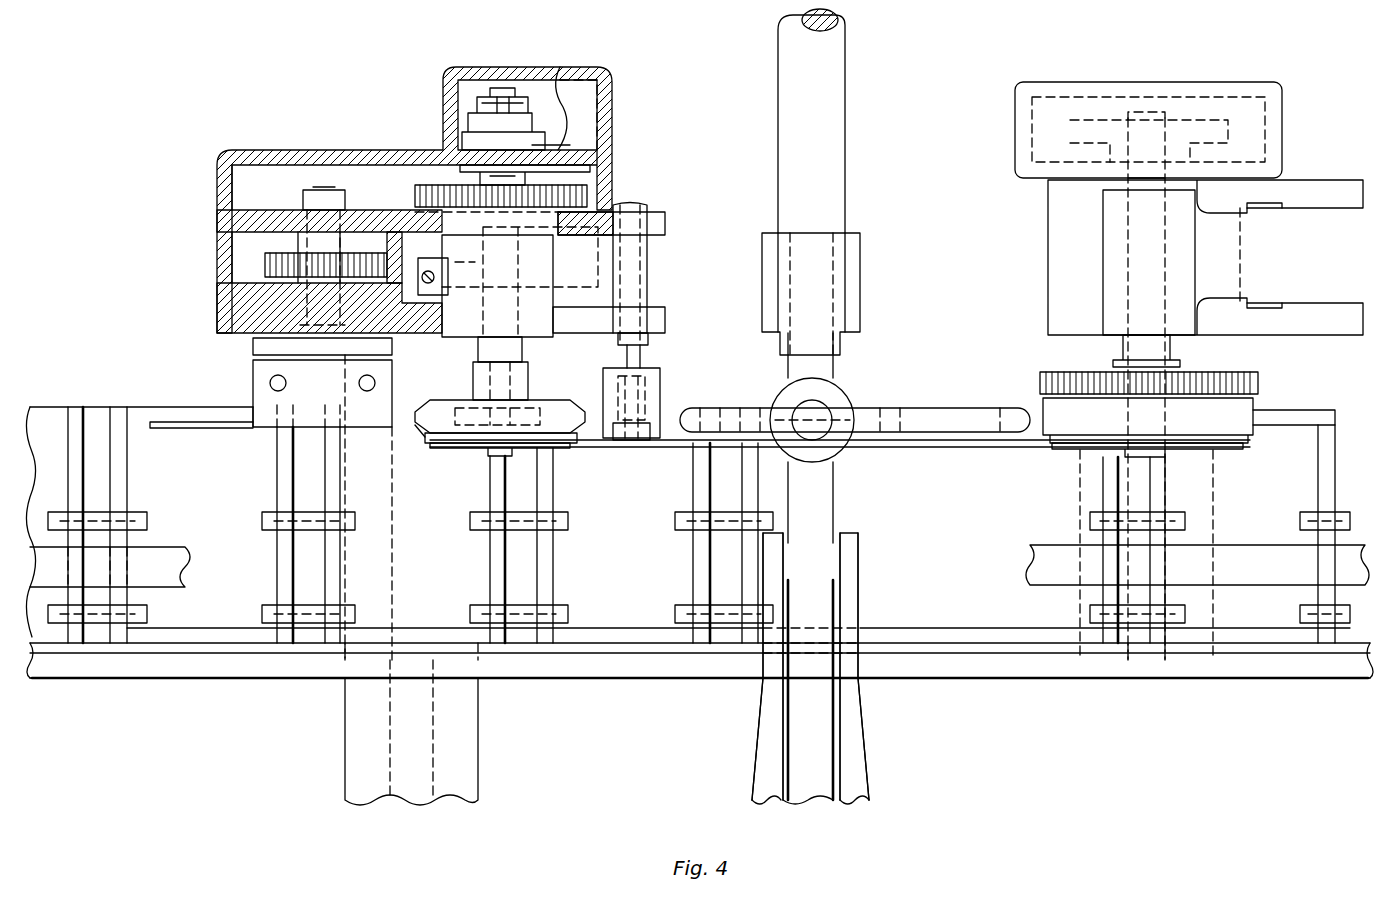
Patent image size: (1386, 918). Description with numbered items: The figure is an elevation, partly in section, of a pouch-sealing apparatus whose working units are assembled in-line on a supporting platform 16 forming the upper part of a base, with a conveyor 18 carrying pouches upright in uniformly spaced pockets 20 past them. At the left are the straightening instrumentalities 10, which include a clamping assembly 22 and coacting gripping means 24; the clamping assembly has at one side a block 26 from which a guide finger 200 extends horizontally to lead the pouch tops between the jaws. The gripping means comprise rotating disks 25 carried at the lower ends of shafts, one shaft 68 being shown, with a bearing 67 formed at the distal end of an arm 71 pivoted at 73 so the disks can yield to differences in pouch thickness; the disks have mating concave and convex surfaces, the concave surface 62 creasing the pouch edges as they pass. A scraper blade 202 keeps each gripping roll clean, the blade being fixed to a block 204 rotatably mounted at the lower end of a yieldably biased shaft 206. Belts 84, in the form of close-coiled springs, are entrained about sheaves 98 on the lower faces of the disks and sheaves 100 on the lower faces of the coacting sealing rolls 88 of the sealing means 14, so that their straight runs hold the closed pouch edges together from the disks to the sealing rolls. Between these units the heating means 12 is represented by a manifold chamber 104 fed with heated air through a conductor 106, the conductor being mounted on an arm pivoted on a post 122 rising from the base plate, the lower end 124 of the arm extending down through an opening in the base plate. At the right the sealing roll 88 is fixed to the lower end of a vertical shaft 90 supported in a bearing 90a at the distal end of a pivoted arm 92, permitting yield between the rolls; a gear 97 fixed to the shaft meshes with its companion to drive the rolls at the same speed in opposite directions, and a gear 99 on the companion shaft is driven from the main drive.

The straightening instrumentalities 10 is at (414, 197).
The heating means 12 is at (893, 390).
The sealing means 14 is at (1305, 128).
The supporting platform 16 is at (578, 682).
The conveyor 18 is at (146, 650).
The pockets 20 is at (133, 430).
The clamping assembly 22 is at (232, 372).
The coacting gripping means 24 is at (542, 396).
The rotating disks 25 is at (452, 400).
The block 26 is at (265, 428).
The concave surface 62 is at (420, 438).
The bearing 67 is at (470, 343).
The shaft 68 is at (520, 262).
The arm 71 is at (593, 315).
The pivot 73 is at (640, 250).
The belts 84 is at (680, 455).
The coacting sealing rolls 88 is at (1252, 422).
The shaft 90 is at (1128, 283).
The bearing 90a is at (1103, 260).
The arm 92 is at (1205, 257).
The gear 97 is at (1245, 374).
The sheaves 98 is at (562, 450).
The gear 99 is at (1222, 135).
The sheaves 100 is at (1060, 450).
The manifold chambers 104 is at (930, 415).
The conductors 106 is at (848, 150).
The posts 122 is at (860, 730).
The lower ends 124 is at (790, 720).
The guide fingers 200 is at (195, 430).
The scraper blades 202 is at (585, 432).
The blocks 204 is at (662, 392).
The shafts 206 is at (642, 360).